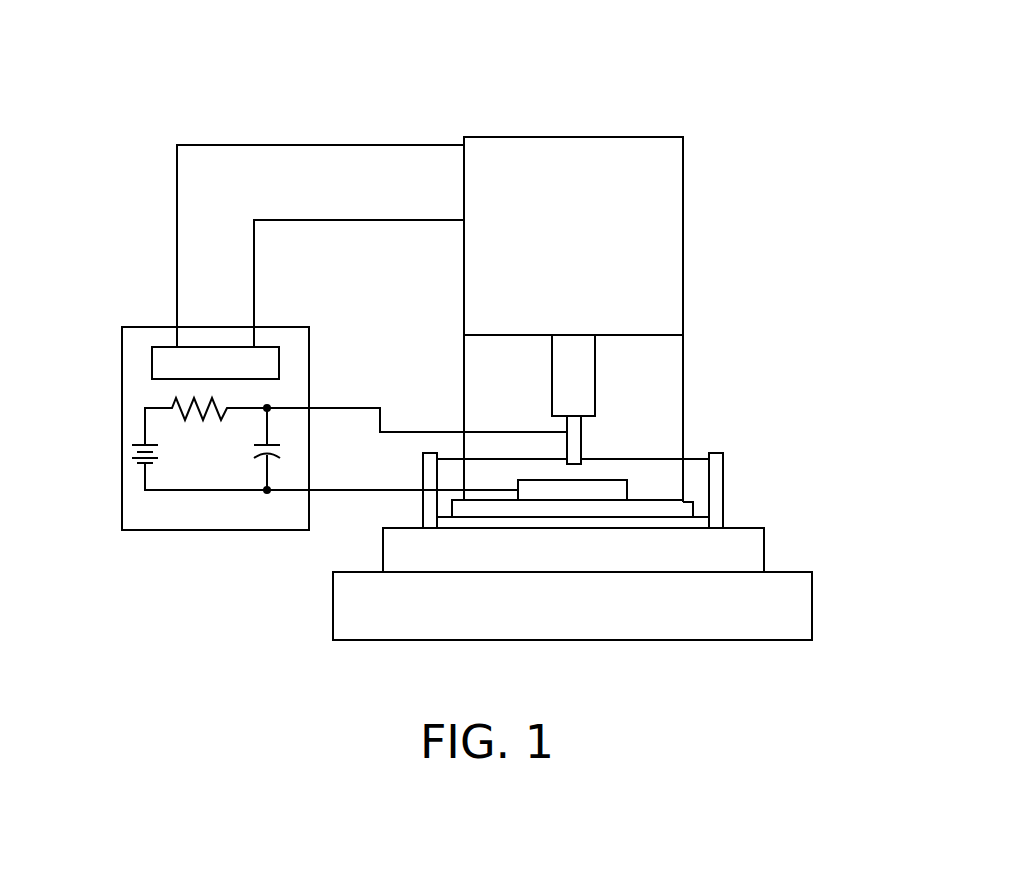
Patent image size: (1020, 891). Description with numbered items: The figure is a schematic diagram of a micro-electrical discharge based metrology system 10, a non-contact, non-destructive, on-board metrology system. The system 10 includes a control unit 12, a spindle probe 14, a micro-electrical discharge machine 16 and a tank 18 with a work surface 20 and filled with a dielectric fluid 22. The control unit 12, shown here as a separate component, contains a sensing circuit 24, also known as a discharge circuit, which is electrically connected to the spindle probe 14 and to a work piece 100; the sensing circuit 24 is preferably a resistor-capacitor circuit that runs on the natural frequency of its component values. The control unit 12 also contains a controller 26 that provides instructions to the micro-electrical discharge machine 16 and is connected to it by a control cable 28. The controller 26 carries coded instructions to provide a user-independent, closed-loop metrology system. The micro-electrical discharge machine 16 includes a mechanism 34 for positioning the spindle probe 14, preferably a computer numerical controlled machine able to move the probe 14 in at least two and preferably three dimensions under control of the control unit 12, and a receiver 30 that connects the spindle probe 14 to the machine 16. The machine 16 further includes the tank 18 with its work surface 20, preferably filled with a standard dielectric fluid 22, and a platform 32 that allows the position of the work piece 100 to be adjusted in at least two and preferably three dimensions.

The micro-electrical discharge based metrology system 10 is at (758, 105).
The control unit 12 is at (143, 522).
The spindle probe 14 is at (581, 437).
The micro-electrical discharge machine 16 is at (660, 237).
The tank 18 is at (723, 478).
The work surface 20 is at (693, 509).
The dielectric fluid 22 is at (692, 470).
The sensing circuit 24 is at (213, 490).
The controller 26 is at (152, 362).
The control cable 28 is at (327, 145).
The receiver 30 is at (595, 383).
The platform 32 is at (764, 550).
The mechanism for positioning the spindle probe 34 is at (660, 314).
The work piece 100 is at (518, 481).